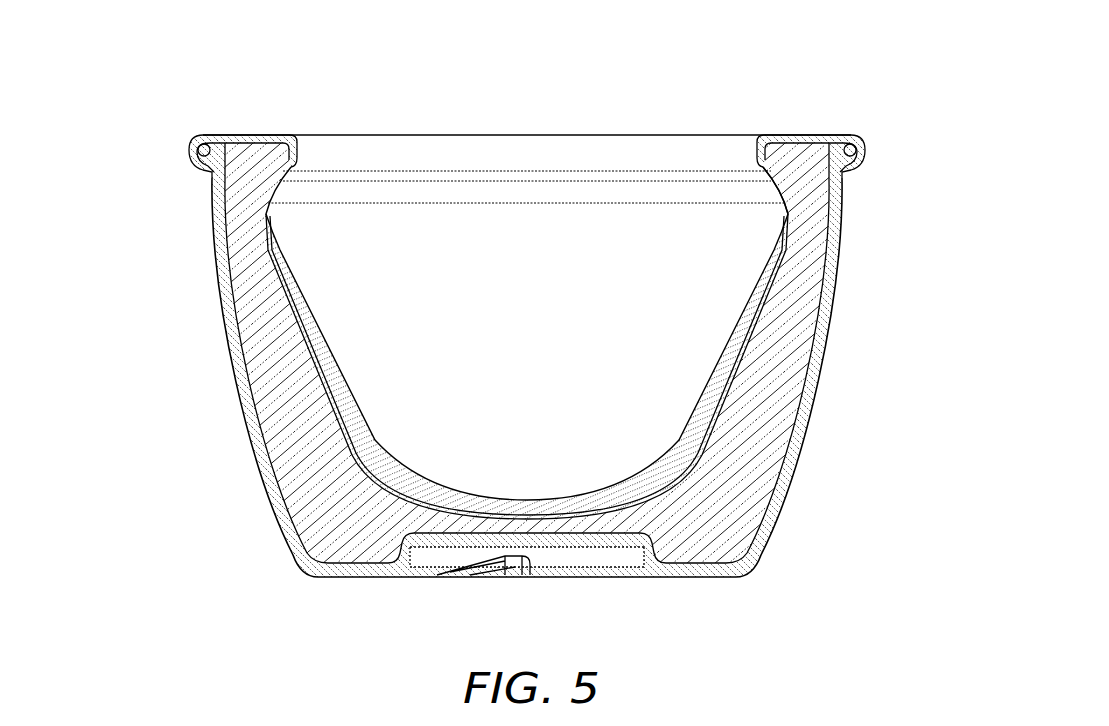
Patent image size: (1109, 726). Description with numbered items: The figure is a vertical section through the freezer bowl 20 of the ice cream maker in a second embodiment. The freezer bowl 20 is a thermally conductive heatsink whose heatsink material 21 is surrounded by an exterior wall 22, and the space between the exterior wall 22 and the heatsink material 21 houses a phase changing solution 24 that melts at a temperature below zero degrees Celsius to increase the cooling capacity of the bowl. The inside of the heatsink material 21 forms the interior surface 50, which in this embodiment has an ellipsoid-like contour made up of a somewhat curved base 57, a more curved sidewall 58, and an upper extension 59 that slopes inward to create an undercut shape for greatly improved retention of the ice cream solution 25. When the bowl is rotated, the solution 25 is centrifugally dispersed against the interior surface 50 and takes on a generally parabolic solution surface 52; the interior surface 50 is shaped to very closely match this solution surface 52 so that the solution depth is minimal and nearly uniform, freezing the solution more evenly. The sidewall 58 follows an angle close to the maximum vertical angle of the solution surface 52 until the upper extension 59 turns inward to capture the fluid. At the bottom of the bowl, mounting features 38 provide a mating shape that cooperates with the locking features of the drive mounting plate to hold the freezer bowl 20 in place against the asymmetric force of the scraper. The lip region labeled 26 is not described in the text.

The freezer bowl 20 is at (148, 116).
The heatsink material 21 is at (782, 262).
The exterior wall 22 is at (789, 473).
The phase changing solution 24 is at (808, 203).
The solution 25 is at (735, 367).
The rolled lip 26 is at (290, 176).
The mounting features 38 is at (513, 572).
The interior surface 50 is at (651, 480).
The solution surface 52 is at (333, 362).
The base 57 is at (433, 506).
The sidewall 58 is at (723, 407).
The upper extension 59 is at (762, 175).